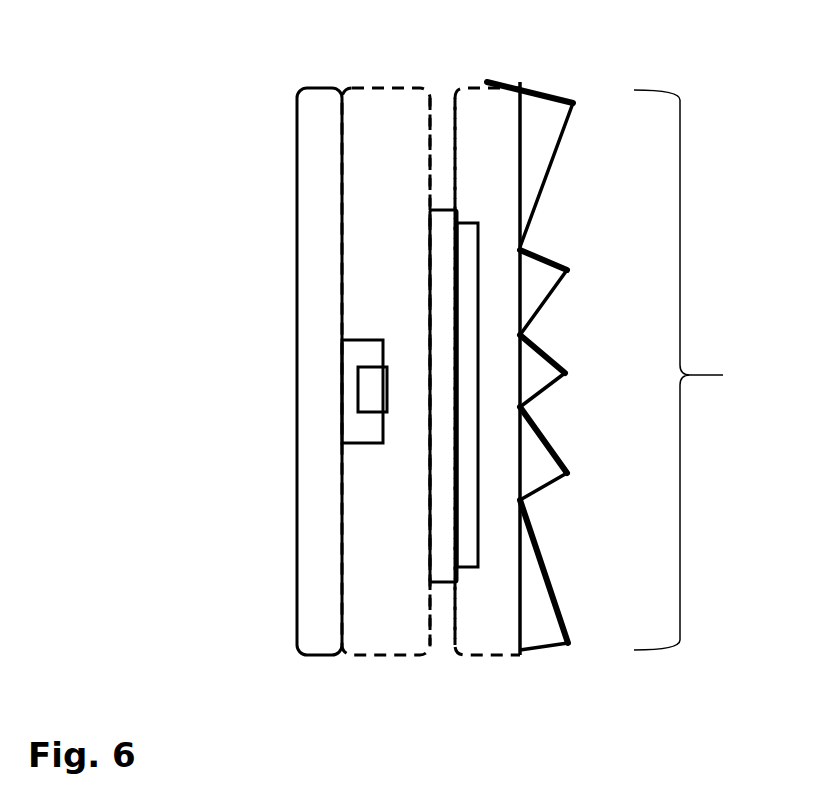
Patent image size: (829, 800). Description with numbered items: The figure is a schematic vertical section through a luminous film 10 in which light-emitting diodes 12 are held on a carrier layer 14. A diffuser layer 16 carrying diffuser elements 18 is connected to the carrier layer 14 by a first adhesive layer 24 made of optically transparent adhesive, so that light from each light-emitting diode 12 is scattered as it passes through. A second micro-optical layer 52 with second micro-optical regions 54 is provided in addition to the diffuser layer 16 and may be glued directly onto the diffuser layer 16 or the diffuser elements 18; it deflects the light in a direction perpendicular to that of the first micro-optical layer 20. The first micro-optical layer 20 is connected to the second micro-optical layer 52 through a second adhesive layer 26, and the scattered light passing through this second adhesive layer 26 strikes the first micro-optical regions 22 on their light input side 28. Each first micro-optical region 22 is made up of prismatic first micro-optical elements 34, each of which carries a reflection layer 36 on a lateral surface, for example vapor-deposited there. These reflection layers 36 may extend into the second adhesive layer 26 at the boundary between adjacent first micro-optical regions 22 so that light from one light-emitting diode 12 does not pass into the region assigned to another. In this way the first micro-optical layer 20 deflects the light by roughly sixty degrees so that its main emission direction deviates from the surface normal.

The luminous film 10 is at (208, 125).
The light-emitting diode 12 is at (358, 390).
The carrier layer 14 is at (310, 318).
The diffuser layer 16 is at (443, 123).
The diffuser elements 18 is at (440, 262).
The first micro-optical layer 20 is at (537, 82).
The first micro-optical regions 22 is at (695, 370).
The first adhesive layer 24 is at (380, 118).
The second adhesive layer 26 is at (482, 125).
The light input side 28 is at (520, 168).
The first micro-optical elements 34 is at (535, 147).
The reflection layer 36 is at (547, 93).
The second micro-optical layer 52 is at (468, 583).
The second micro-optical regions 54 is at (467, 489).